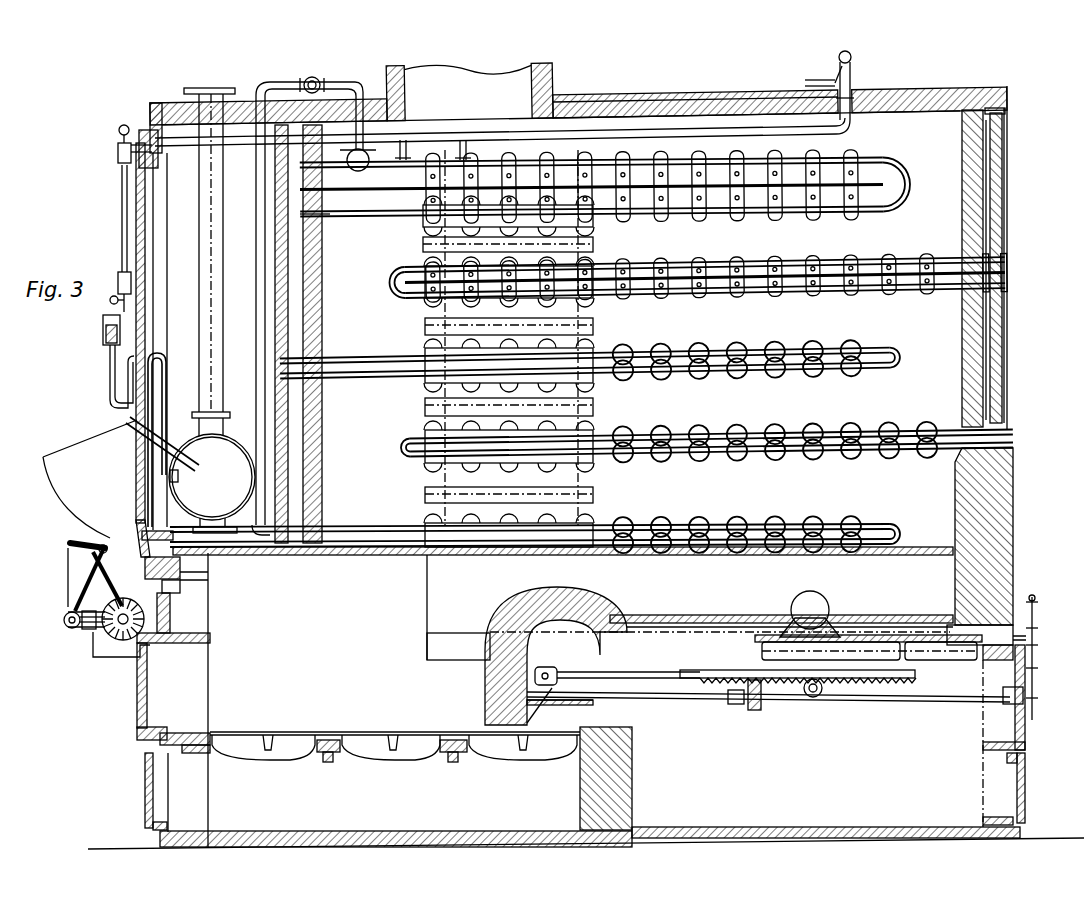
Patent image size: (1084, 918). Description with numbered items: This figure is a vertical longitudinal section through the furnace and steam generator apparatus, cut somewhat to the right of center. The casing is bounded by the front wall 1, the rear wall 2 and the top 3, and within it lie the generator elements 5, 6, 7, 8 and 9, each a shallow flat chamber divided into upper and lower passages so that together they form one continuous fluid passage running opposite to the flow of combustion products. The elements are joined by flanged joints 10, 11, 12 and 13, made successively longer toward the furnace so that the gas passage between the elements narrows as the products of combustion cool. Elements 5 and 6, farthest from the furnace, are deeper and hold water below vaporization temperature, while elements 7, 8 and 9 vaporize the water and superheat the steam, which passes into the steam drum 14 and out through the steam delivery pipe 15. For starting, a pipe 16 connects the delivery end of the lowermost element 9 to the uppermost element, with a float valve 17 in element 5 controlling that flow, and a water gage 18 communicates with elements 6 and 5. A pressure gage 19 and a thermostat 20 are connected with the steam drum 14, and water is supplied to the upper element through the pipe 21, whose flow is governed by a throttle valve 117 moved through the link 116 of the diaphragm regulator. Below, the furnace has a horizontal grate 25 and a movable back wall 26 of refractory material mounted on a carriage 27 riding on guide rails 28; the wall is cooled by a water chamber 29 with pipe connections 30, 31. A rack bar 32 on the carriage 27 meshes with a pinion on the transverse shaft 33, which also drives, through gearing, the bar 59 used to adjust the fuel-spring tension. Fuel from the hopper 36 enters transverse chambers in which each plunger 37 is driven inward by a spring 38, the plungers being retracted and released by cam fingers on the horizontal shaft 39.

The front wall 1 is at (137, 462).
The rear wall 2 is at (1007, 472).
The top 3 is at (768, 104).
The generator element 5 is at (902, 197).
The generator element 6 is at (872, 259).
The generator element 7 is at (873, 356).
The generator element 8 is at (920, 420).
The generator element 9 is at (842, 527).
The flanged joint 10 is at (577, 228).
The flanged joint 11 is at (578, 313).
The flanged joint 12 is at (578, 396).
The flanged joint 13 is at (580, 474).
The steam drum 14 is at (212, 475).
The steam delivery pipe 15 is at (222, 253).
The pipe 16 is at (265, 252).
The float valve 17 is at (347, 201).
The water gage 18 is at (120, 182).
The pressure gage 19 is at (103, 342).
The thermostat 20 is at (135, 436).
The pipe 21 is at (695, 84).
The grate 25 is at (297, 742).
The wall 26 is at (497, 665).
The carriage 27 is at (695, 617).
The guide rails 28 is at (475, 633).
The water chamber 29 is at (538, 652).
The pipe connection 30 is at (657, 702).
The pipe connection 31 is at (898, 702).
The rack bar 32 is at (703, 706).
The transverse shaft 33 is at (816, 702).
The fuel hopper 36 is at (72, 488).
The plunger 37 is at (180, 586).
The spring 38 is at (83, 580).
The horizontal shaft 39 is at (66, 652).
The bar 59 is at (121, 645).
The link 116 is at (818, 68).
The throttle valve 117 is at (858, 70).